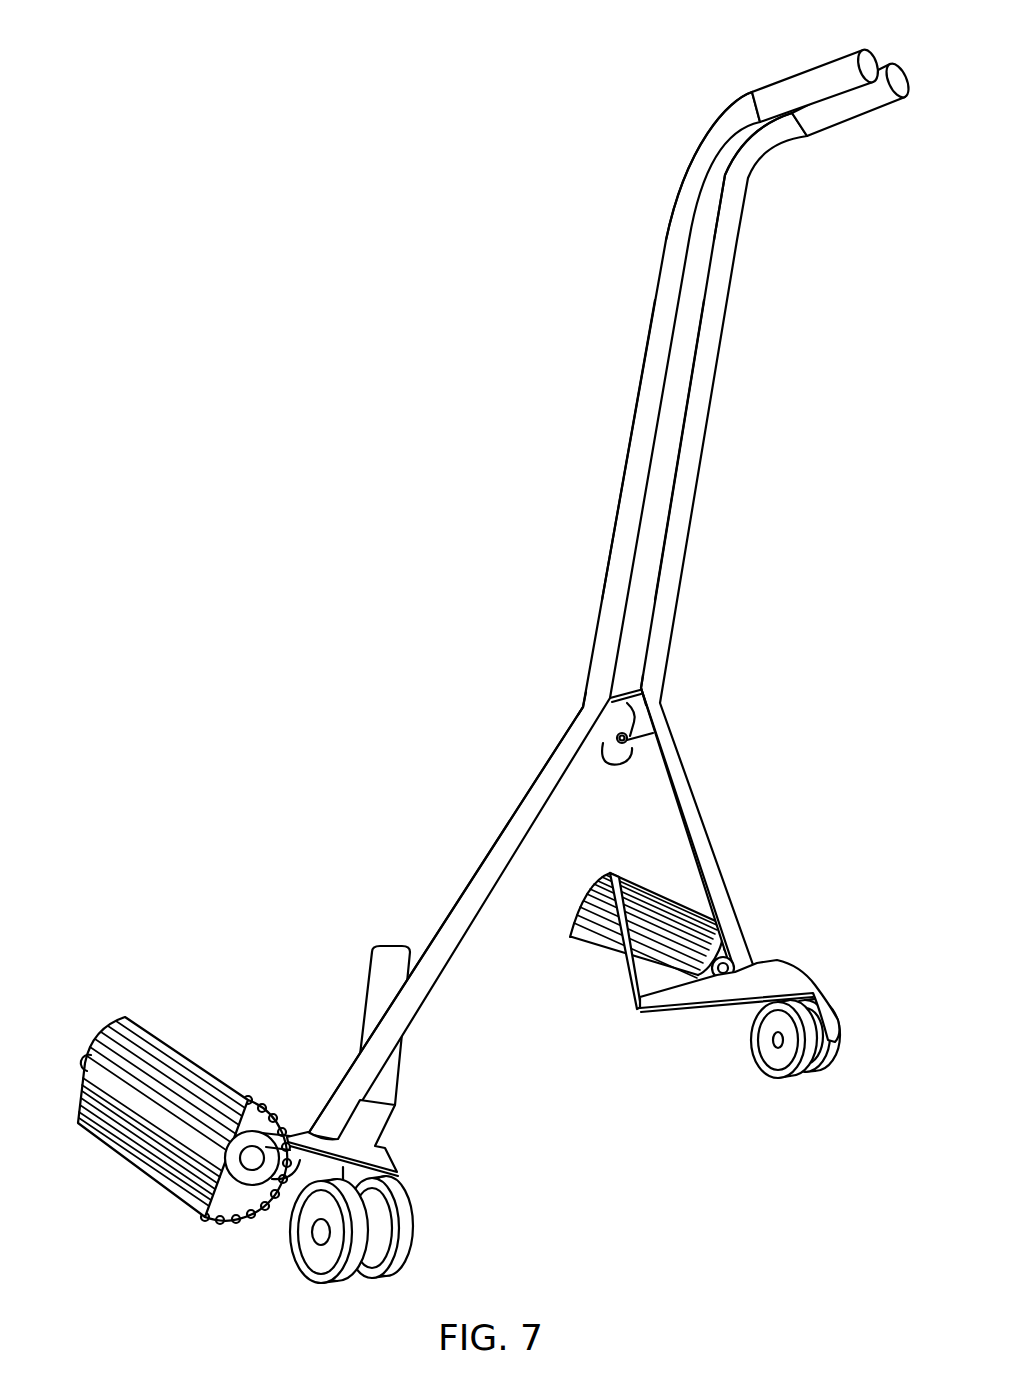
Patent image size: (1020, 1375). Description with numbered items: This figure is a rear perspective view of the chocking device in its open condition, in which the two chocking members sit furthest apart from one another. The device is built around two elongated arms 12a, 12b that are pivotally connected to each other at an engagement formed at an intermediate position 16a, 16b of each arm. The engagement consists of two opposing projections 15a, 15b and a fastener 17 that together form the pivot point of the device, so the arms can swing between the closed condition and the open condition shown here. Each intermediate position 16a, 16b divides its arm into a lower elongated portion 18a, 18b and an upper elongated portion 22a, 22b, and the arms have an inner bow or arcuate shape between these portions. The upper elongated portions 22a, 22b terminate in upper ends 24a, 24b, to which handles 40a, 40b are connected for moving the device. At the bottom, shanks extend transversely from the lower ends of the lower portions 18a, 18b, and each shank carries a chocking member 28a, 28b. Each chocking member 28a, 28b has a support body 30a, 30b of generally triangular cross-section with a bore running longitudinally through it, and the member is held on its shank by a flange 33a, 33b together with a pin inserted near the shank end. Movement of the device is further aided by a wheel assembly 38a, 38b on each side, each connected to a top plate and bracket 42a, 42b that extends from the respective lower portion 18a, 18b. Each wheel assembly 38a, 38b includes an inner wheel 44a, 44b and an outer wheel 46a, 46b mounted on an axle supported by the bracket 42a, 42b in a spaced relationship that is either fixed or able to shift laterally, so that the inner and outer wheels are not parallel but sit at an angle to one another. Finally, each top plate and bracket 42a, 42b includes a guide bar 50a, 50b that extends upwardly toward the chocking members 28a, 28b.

The arm 12a is at (734, 501).
The arm 12b is at (595, 577).
The opposing projection 15a is at (598, 752).
The opposing projection 15b is at (642, 720).
The intermediate position 16a is at (653, 703).
The intermediate position 16b is at (588, 710).
The fastener 17 is at (625, 750).
The lower elongated portion 18a is at (687, 790).
The lower elongated portion 18b is at (508, 832).
The upper elongated portion 22a is at (697, 398).
The upper elongated portion 22b is at (650, 380).
The upper end 24a is at (750, 165).
The upper end 24b is at (712, 133).
The chocking member 28a is at (616, 959).
The chocking member 28b is at (385, 1081).
The support body 30a is at (595, 940).
The support body 30b is at (150, 1043).
The flange 33a is at (725, 980).
The flange 33b is at (257, 1140).
The wheel assembly 38a is at (775, 1011).
The wheel assembly 38b is at (319, 1198).
The handle 40a is at (888, 70).
The handle 40b is at (838, 65).
The top plate and bracket 42a is at (807, 1010).
The top plate and bracket 42b is at (387, 1187).
The inner wheel 44a is at (807, 1060).
The inner wheel 44b is at (413, 1232).
The outer wheel 46a is at (838, 1013).
The outer wheel 46b is at (308, 1262).
The guide bar 50a is at (642, 985).
The guide bar 50b is at (390, 950).